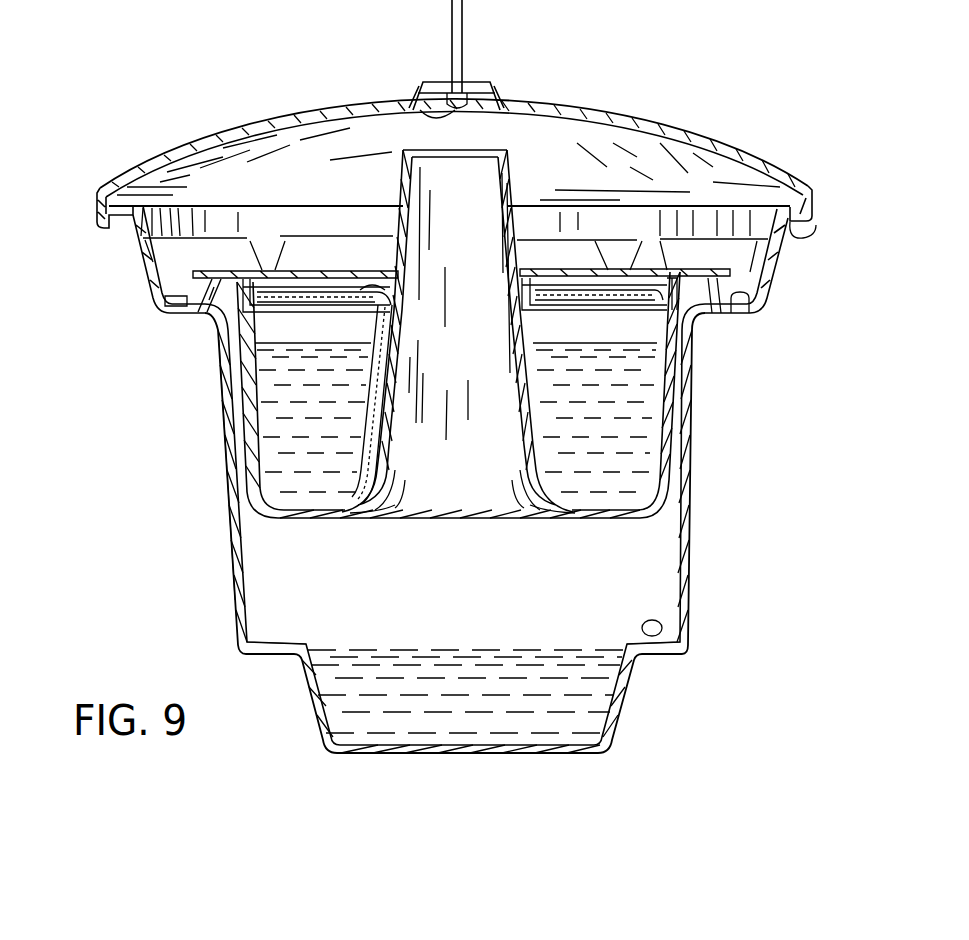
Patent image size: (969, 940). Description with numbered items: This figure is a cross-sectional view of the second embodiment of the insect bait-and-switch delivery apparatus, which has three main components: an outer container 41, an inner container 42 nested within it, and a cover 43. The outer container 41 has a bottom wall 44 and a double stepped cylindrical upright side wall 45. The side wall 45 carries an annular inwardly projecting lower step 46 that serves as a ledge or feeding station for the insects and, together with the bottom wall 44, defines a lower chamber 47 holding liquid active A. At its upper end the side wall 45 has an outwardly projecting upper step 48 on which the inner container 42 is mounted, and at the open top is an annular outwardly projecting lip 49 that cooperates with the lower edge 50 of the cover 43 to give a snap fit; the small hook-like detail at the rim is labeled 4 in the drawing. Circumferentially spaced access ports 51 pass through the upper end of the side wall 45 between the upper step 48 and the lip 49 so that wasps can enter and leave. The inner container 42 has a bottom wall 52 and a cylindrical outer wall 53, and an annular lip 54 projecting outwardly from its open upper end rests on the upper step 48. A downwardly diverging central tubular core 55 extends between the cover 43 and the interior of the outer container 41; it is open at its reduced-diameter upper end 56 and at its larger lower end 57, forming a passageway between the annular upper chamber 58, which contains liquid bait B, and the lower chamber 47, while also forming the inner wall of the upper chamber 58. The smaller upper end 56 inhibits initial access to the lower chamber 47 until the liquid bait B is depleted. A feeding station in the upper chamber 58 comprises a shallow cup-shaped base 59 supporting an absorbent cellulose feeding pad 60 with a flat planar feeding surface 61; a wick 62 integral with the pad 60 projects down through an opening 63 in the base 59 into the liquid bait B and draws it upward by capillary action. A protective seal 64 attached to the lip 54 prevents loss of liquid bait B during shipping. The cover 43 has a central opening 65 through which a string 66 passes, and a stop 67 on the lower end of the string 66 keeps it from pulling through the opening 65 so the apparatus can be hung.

The rim hook 4 is at (806, 238).
The outer container 41 is at (218, 545).
The inner container 42 is at (241, 478).
The cover 43 is at (276, 105).
The bottom wall 44 is at (465, 753).
The side wall 45 is at (690, 527).
The lower step 46 is at (665, 628).
The lower chamber 47 is at (463, 615).
The upper step 48 is at (738, 296).
The lip 49 is at (128, 222).
The lower edge 50 is at (95, 235).
The access ports 51 is at (248, 246).
The bottom wall 52 is at (318, 520).
The outer wall 53 is at (228, 393).
The lip 54 is at (172, 310).
The tubular core 55 is at (520, 382).
The upper end 56 is at (478, 150).
The lower end 57 is at (543, 520).
The upper chamber 58 is at (460, 308).
The base 59 is at (212, 300).
The feeding pad 60 is at (245, 300).
The feeding surface 61 is at (583, 290).
The wick 62 is at (373, 423).
The opening 63 is at (388, 310).
The protective seal 64 is at (370, 252).
The central opening 65 is at (453, 78).
The string 66 is at (465, 40).
The stop 67 is at (425, 100).
The liquid active A is at (330, 725).
The liquid bait B is at (633, 408).